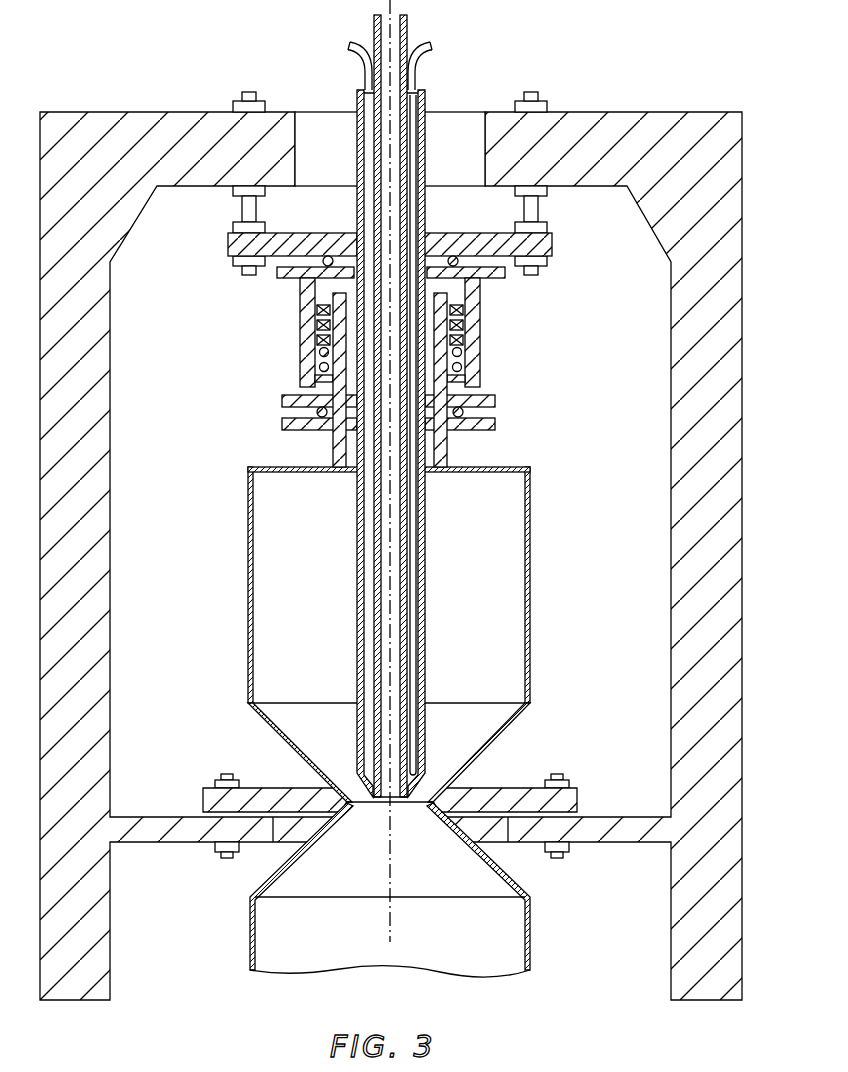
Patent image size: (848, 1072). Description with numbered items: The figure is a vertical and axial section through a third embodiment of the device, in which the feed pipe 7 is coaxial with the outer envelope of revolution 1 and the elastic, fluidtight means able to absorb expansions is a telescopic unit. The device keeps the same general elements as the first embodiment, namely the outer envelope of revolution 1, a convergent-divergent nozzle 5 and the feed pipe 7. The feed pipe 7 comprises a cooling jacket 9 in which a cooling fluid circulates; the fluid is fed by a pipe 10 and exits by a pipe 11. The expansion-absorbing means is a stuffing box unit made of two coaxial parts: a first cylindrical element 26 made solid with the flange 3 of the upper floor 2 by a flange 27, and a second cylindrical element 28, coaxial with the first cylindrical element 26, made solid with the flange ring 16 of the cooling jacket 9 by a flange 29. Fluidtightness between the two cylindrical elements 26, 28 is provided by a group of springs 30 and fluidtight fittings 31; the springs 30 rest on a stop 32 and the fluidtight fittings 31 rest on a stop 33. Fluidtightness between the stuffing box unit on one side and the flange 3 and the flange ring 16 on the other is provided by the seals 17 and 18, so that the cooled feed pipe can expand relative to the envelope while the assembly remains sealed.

The outer envelope of revolution 1 is at (249, 536).
The upper floor 2 is at (520, 467).
The flange 3 is at (284, 426).
The convergent-divergent nozzle 5 is at (305, 803).
The feed pipe 7 is at (396, 179).
The cooling jacket 9 is at (364, 615).
The pipe 10 is at (424, 40).
The pipe 11 is at (356, 40).
The flange ring 16 is at (310, 243).
The seal 17 is at (494, 424).
The seal 18 is at (470, 250).
The first cylindrical element 26 is at (338, 358).
The flange 27 is at (283, 400).
The second cylindrical element 28 is at (474, 320).
The flange 29 is at (278, 272).
The springs 30 is at (462, 366).
The fluidtight fittings 31 is at (315, 340).
The stop 32 is at (462, 381).
The stop 33 is at (316, 300).